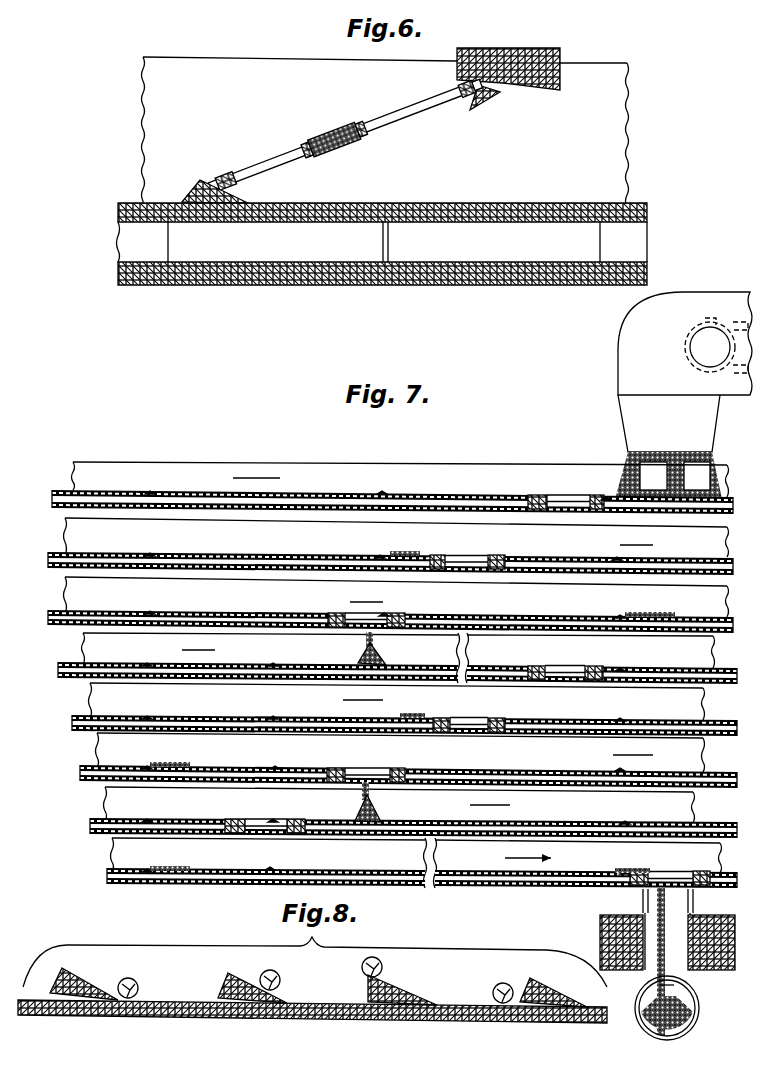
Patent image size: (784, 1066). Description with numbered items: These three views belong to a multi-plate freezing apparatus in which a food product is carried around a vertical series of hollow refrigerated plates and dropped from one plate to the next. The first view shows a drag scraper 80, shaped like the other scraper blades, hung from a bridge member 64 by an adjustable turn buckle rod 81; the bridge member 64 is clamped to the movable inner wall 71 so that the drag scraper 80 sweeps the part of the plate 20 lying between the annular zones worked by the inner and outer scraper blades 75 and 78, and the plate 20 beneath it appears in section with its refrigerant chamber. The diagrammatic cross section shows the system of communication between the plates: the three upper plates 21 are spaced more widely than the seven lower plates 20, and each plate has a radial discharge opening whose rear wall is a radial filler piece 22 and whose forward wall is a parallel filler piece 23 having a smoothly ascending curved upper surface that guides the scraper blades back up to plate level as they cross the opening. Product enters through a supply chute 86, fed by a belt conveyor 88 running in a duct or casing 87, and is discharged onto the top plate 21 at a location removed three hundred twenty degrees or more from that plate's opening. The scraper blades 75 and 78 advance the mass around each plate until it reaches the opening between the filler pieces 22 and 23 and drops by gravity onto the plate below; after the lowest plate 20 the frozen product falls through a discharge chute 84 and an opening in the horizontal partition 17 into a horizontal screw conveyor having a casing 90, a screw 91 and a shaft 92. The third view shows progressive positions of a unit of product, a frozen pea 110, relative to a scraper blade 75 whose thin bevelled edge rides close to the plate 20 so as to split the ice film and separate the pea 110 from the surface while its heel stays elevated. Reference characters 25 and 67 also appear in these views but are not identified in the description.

In FIG. 7, the horizontal partition 17 is at (615, 928).
In FIG. 6, the refrigerated plate 20 is at (630, 212).
In FIG. 7, the refrigerated plate 20 is at (737, 669).
In FIG. 8, the refrigerated plate 20 is at (178, 1003).
In FIG. 7, the upper refrigerated plate 21 is at (730, 500).
In FIG. 7, the radial filler piece 22 is at (537, 496).
In FIG. 7, the filler piece 23 is at (597, 496).
In FIG. 6, the pipe section 25 is at (160, 244).
In FIG. 6, the bridge member 64 is at (560, 60).
In FIG. 7, the material deposit 67 is at (150, 492).
In FIG. 6, the inner wall 71 is at (615, 125).
In FIG. 7, the inner wall 71 is at (95, 636).
In FIG. 7, the scraper blade 75 is at (385, 662).
In FIG. 8, the scraper blade 75 is at (82, 983).
In FIG. 7, the scraper blade 78 is at (147, 664).
In FIG. 6, the drag scraper 80 is at (208, 186).
In FIG. 7, the drag scraper 80 is at (273, 664).
In FIG. 6, the adjustable turn buckle rod 81 is at (342, 132).
In FIG. 7, the discharge chute 84 is at (645, 903).
In FIG. 7, the supply chute 86 is at (632, 415).
In FIG. 7, the duct or casing 87 is at (628, 333).
In FIG. 7, the belt conveyor 88 is at (733, 322).
In FIG. 7, the casing 90 is at (698, 1014).
In FIG. 7, the screw 91 is at (688, 1022).
In FIG. 7, the shaft 92 is at (670, 1005).
In FIG. 8, the frozen pea 110 is at (133, 980).